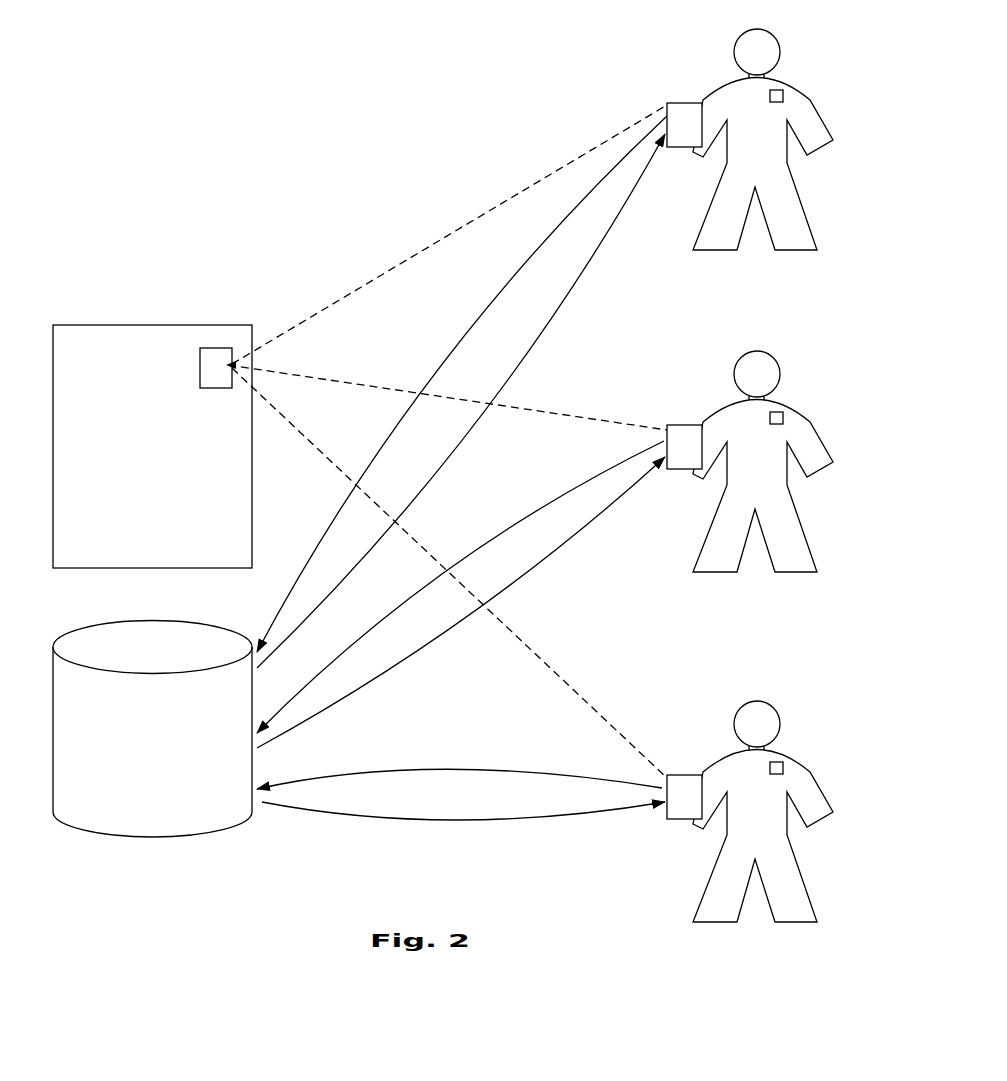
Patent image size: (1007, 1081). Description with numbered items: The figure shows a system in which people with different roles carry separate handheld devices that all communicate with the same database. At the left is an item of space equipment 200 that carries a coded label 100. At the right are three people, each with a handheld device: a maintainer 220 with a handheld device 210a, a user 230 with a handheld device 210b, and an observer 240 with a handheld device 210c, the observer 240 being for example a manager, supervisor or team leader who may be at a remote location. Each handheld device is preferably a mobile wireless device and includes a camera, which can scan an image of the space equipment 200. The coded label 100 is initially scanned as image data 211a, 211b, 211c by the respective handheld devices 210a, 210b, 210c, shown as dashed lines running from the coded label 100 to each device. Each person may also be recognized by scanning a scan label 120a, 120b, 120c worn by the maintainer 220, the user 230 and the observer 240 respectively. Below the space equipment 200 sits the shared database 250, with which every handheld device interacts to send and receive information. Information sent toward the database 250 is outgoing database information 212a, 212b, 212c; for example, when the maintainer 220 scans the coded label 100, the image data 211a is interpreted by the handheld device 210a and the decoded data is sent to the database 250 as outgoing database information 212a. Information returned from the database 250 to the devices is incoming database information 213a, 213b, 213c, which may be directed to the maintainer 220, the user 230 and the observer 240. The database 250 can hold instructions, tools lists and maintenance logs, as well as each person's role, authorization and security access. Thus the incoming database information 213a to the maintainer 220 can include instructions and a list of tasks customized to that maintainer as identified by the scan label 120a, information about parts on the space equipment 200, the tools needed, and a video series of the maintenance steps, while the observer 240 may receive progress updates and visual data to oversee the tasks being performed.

The coded label 100 is at (199, 367).
The space equipment 200 is at (137, 325).
The database 250 is at (137, 620).
The maintainer 220 is at (770, 37).
The user 230 is at (770, 359).
The observer 240 is at (770, 709).
The scan label 120a is at (788, 89).
The scan label 120b is at (788, 411).
The scan label 120c is at (788, 761).
The handheld device 210a is at (678, 102).
The handheld device 210b is at (678, 424).
The handheld device 210c is at (675, 820).
The image data 211a is at (357, 288).
The image data 211b is at (347, 383).
The image data 211c is at (307, 440).
The outgoing database information 212a is at (517, 272).
The outgoing database information 212b is at (517, 523).
The outgoing database information 212c is at (467, 767).
The incoming database information 213a is at (557, 307).
The incoming database information 213b is at (543, 560).
The incoming database information 213c is at (472, 823).